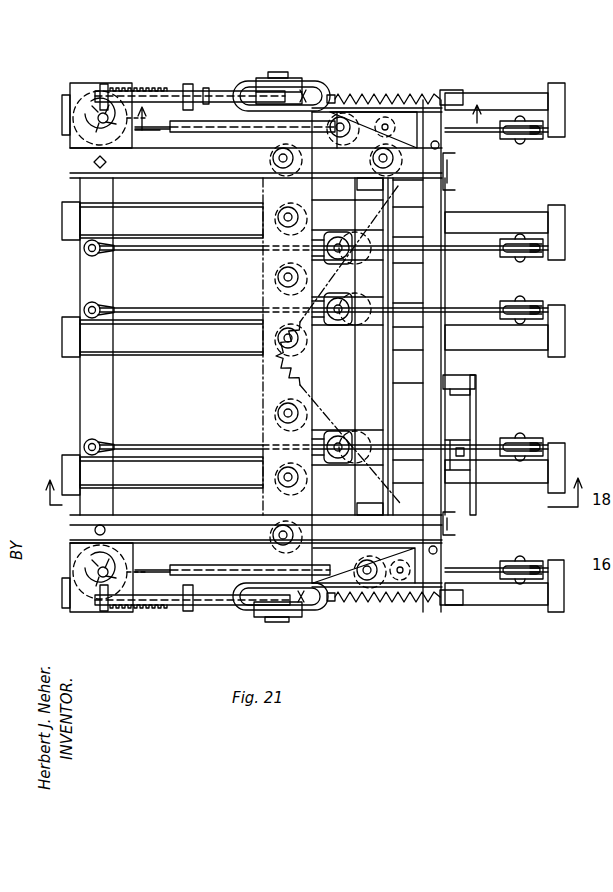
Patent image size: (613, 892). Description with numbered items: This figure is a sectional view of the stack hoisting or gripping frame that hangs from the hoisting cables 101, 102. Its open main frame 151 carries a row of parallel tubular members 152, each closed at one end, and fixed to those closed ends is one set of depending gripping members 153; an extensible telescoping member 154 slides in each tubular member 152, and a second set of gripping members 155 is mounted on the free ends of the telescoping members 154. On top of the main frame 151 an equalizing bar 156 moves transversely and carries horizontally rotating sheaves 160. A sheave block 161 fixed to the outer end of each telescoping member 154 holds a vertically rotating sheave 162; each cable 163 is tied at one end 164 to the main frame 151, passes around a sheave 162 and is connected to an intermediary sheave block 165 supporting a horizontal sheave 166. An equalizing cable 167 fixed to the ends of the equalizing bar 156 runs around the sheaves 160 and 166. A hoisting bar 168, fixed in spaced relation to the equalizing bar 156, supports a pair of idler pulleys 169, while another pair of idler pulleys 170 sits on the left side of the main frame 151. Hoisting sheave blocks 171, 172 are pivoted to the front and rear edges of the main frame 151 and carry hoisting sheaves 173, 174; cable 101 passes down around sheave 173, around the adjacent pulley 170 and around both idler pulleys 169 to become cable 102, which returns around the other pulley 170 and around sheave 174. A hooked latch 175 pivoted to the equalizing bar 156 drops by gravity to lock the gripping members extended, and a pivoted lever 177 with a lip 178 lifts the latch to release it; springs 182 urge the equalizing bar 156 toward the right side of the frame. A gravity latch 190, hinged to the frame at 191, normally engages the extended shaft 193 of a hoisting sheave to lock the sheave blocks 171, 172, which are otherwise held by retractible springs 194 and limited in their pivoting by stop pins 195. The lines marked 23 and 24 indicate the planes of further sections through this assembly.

The section line 23 is at (298, 481).
The section line 24 is at (308, 130).
The hoisting cable 101 is at (323, 97).
The hoisting cable 102 is at (300, 610).
The main frame 151 is at (103, 382).
The tubular member 152 is at (157, 328).
The gripping member 153 is at (62, 213).
The telescoping member 154 is at (522, 100).
The gripping member 155 is at (560, 226).
The equalizing bar 156 is at (275, 382).
The sheave 160 is at (273, 210).
The sheave block 161 is at (506, 139).
The sheave 162 is at (536, 139).
The cable 163 is at (220, 307).
The cable end 164 is at (84, 250).
The sheave block 165 is at (345, 440).
The sheave 166 is at (373, 273).
The equalizing cable 167 is at (322, 236).
The hoisting bar 168 is at (395, 268).
The idler pulley 169 is at (372, 182).
The idler pulley 170 is at (68, 135).
The hoisting sheave block 171 is at (318, 86).
The hoisting sheave block 172 is at (318, 608).
The hoisting sheave 173 is at (263, 90).
The hoisting sheave 174 is at (262, 606).
The latch 175 is at (420, 367).
The pivoted lever 177 is at (476, 408).
The lip 178 is at (457, 377).
The spring 182 is at (398, 150).
The latch 190 is at (190, 133).
The hinge 191 is at (445, 100).
The extended shaft 193 is at (262, 150).
The retractible spring 194 is at (405, 95).
The stop pin 195 is at (203, 88).